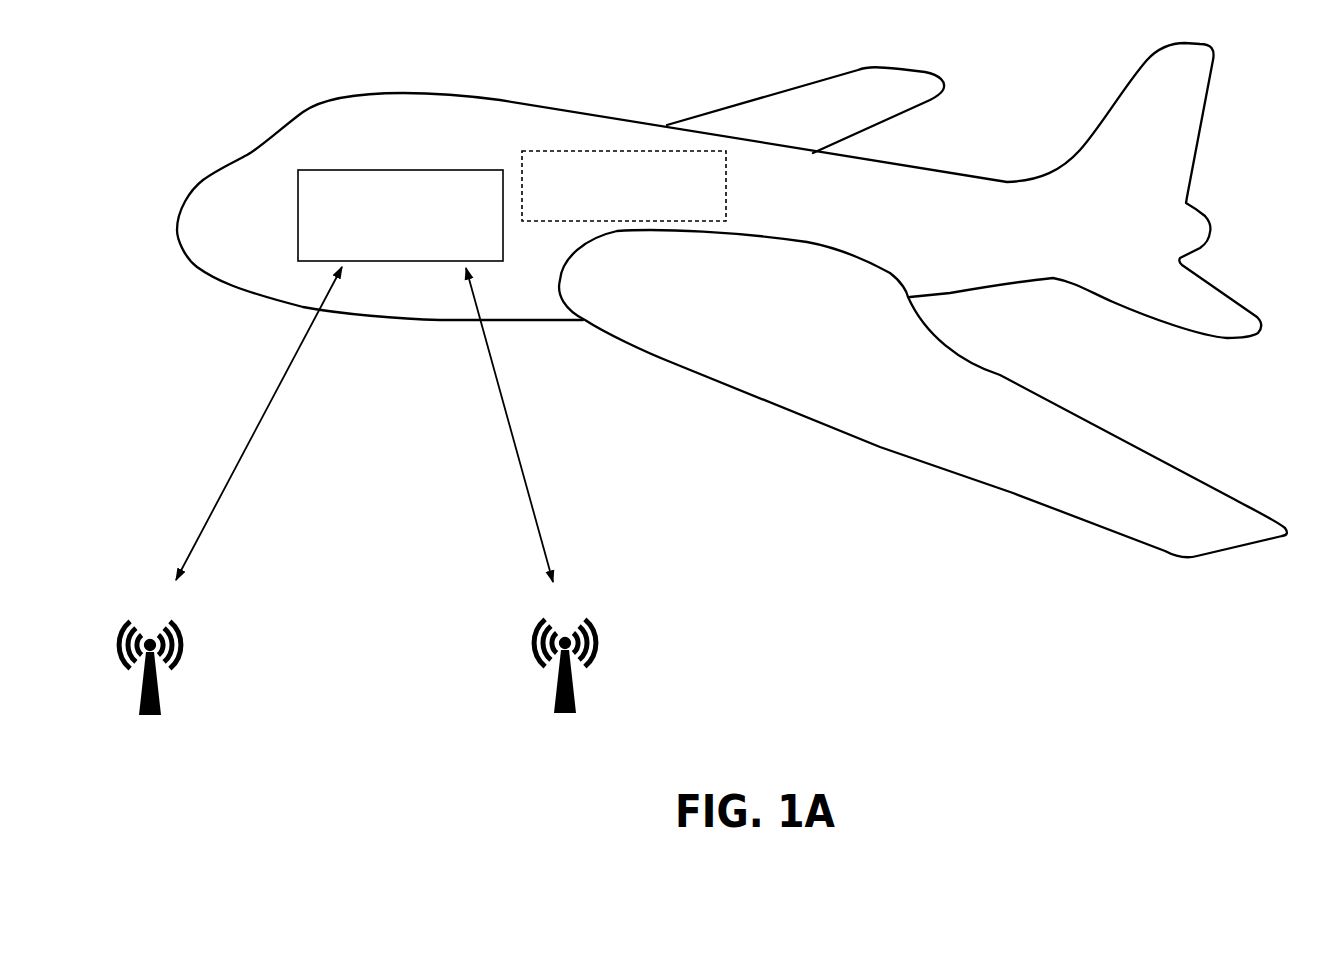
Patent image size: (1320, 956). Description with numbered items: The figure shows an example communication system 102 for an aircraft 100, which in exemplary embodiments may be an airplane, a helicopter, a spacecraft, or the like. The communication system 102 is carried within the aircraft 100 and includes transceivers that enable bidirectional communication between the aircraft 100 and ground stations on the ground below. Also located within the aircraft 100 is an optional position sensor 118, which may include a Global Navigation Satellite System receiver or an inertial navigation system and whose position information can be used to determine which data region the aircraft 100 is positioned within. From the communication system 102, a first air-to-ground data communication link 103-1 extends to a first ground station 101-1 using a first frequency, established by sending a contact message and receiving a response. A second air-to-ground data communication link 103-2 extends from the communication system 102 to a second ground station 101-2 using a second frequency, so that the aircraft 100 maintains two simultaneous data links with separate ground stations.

The aircraft 100 is at (186, 129).
The communication system 102 is at (384, 252).
The position sensor 118 is at (608, 207).
The first air-to-ground data communication link 103-1 is at (515, 440).
The second air-to-ground data communication link 103-2 is at (287, 383).
The first ground station 101-1 is at (607, 643).
The second ground station 101-2 is at (192, 646).